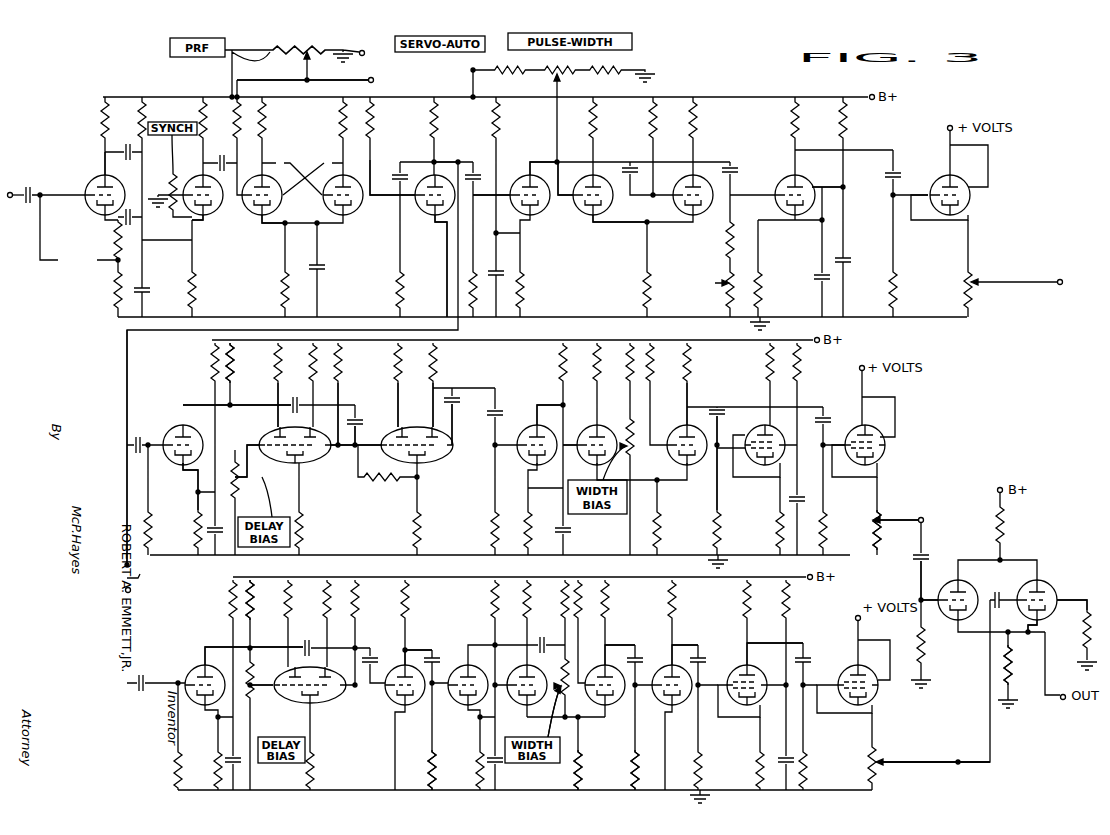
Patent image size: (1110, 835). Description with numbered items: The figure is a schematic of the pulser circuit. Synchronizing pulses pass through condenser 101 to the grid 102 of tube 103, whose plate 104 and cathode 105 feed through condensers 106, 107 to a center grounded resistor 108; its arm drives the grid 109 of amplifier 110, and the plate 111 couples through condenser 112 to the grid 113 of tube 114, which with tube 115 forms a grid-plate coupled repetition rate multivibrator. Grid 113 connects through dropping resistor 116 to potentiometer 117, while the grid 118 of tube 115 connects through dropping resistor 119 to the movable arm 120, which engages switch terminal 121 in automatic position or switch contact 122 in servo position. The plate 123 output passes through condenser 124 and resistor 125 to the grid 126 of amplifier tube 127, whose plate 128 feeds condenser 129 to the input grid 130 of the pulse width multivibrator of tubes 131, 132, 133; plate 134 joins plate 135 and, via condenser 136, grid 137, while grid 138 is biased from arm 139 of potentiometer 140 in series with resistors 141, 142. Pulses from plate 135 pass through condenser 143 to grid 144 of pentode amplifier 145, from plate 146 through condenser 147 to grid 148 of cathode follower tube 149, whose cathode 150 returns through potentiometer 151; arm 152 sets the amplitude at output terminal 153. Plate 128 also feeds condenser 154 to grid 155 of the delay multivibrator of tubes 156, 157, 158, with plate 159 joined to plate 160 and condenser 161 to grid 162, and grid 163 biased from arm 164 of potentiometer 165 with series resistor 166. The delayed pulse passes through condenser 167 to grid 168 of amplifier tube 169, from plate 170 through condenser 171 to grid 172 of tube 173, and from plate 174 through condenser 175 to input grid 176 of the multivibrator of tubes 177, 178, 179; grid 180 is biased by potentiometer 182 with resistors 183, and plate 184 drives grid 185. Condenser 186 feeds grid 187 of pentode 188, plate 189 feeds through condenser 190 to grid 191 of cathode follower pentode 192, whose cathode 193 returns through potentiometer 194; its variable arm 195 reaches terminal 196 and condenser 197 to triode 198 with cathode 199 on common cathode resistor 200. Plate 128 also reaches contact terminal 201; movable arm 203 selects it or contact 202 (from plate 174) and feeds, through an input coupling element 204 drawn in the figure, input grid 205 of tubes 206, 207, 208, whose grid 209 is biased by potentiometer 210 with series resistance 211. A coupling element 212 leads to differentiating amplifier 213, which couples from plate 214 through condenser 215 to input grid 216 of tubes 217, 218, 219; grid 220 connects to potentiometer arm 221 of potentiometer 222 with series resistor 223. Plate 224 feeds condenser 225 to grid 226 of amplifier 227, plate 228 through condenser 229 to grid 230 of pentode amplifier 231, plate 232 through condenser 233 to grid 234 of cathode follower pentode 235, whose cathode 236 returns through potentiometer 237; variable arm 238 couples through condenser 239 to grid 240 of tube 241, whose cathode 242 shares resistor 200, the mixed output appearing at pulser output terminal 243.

The condenser 101 is at (30, 192).
The grid 102 is at (55, 202).
The tube 103 is at (87, 194).
The plate 104 is at (104, 175).
The cathode 105 is at (114, 215).
The condenser 106 is at (120, 145).
The condenser 107 is at (129, 226).
The center grounded resistor 108 is at (173, 213).
The grid 109 is at (184, 154).
The amplifier 110 is at (206, 216).
The plate 111 is at (215, 211).
The coupling condenser 112 is at (218, 153).
The grid 113 is at (256, 200).
The tube 114 is at (268, 223).
The tube 115 is at (343, 216).
The dropping resistor 116 is at (236, 140).
The potentiometer 117 is at (299, 42).
The grid 118 is at (388, 192).
The dropping resistor 119 is at (371, 115).
The movable arm 120 is at (384, 79).
The switch terminal 121 is at (350, 80).
The switch contact 122 is at (372, 42).
The plate 123 is at (399, 186).
The condenser 124 is at (401, 170).
The resistor 125 is at (404, 283).
The grid 126 is at (424, 262).
The tube 127 is at (440, 217).
The plate 128 is at (432, 161).
The coupling condenser 129 is at (473, 170).
The input grid 130 is at (490, 192).
The tube 131 is at (530, 198).
The tube 132 is at (593, 203).
The tube 133 is at (698, 200).
The plate 134 is at (531, 172).
The plate 135 is at (566, 169).
The coupling condenser 136 is at (630, 165).
The grid 137 is at (653, 150).
The grid 138 is at (598, 212).
The movable arm 139 is at (555, 86).
The potentiometer 140 is at (562, 61).
The resistor 141 is at (618, 68).
The resistor 142 is at (524, 68).
The coupling condenser 143 is at (731, 165).
The grid 144 is at (745, 255).
The pentode amplifier 145 is at (777, 184).
The plate 146 is at (803, 172).
The condenser 147 is at (884, 179).
The grid 148 is at (930, 196).
The cathode follower output tube 149 is at (971, 196).
The cathode 150 is at (968, 205).
The potentiometer 151 is at (972, 293).
The movable arm 152 is at (978, 278).
The output terminal 153 is at (1057, 270).
The coupling condenser 154 is at (139, 436).
The input grid 155 is at (174, 486).
The tube 156 is at (190, 463).
The tube 157 is at (276, 426).
The tube 158 is at (310, 466).
The plate 159 is at (183, 418).
The plate 160 is at (275, 410).
The condenser 161 is at (297, 396).
The grid 162 is at (340, 432).
The grid 163 is at (247, 445).
The movable arm 164 is at (266, 491).
The potentiometer 165 is at (238, 480).
The series resistor 166 is at (232, 378).
The condenser 167 is at (356, 412).
The grid 168 is at (370, 438).
The amplifier tube 169 is at (379, 467).
The plate 170 is at (399, 410).
The condenser 171 is at (457, 386).
The grid 172 is at (447, 439).
The tube 173 is at (428, 466).
The plate 174 is at (432, 428).
The condenser 175 is at (500, 408).
The input grid 176 is at (505, 501).
The tube 177 is at (526, 437).
The tube 178 is at (577, 427).
The tube 179 is at (688, 415).
The grid 180 is at (605, 432).
The potentiometer 182 is at (644, 438).
The D. C. resistors 183 is at (628, 368).
The plate 184 is at (538, 412).
The grid 185 is at (672, 435).
The condenser 186 is at (720, 408).
The grid 187 is at (720, 432).
The pentode amplifier tube 188 is at (756, 459).
The plate 189 is at (768, 432).
The condenser 190 is at (823, 414).
The grid 191 is at (854, 461).
The pentode 192 is at (882, 425).
The cathode 193 is at (880, 452).
The potentiometer 194 is at (881, 528).
The variable arm 195 is at (880, 517).
The terminal 196 is at (924, 519).
The condenser 197 is at (925, 553).
The triode 198 is at (945, 598).
The cathode 199 is at (956, 618).
The common cathode resistor 200 is at (1010, 650).
The contact terminal 201 is at (126, 558).
The contact 202 is at (152, 576).
The movable arm 203 is at (131, 590).
The coupling capacitor 204 is at (144, 688).
The input grid 205 is at (188, 680).
The tube 206 is at (204, 660).
The tube 207 is at (297, 650).
The tube 208 is at (326, 698).
The grid 209 is at (267, 667).
The potentiometer 210 is at (252, 685).
The series resistance 211 is at (252, 603).
The capacitor 212 is at (377, 643).
The differentiating amplifier 213 is at (402, 667).
The plate 214 is at (408, 650).
The condenser 215 is at (436, 658).
The input grid 216 is at (435, 690).
The tube 217 is at (470, 675).
The tube 218 is at (522, 670).
The tube 219 is at (609, 694).
The grid 220 is at (552, 673).
The potentiometer arm 221 is at (548, 708).
The potentiometer 222 is at (582, 745).
The series resistor 223 is at (563, 605).
The plate 224 is at (605, 663).
The condenser 225 is at (640, 658).
The grid 226 is at (639, 690).
The amplifier 227 is at (680, 695).
The plate 228 is at (674, 650).
The condenser 229 is at (702, 658).
The grid 230 is at (739, 701).
The pentode amplifier 231 is at (762, 697).
The plate 232 is at (752, 664).
The condenser 233 is at (800, 656).
The grid 234 is at (844, 699).
The pentode 235 is at (877, 684).
The cathode 236 is at (870, 703).
The potentiometer 237 is at (878, 769).
The variable arm 238 is at (883, 758).
The condenser 239 is at (1000, 590).
The grid 240 is at (1055, 586).
The tube 241 is at (1037, 587).
The cathode 242 is at (1050, 617).
The pulser output terminal 243 is at (1064, 701).